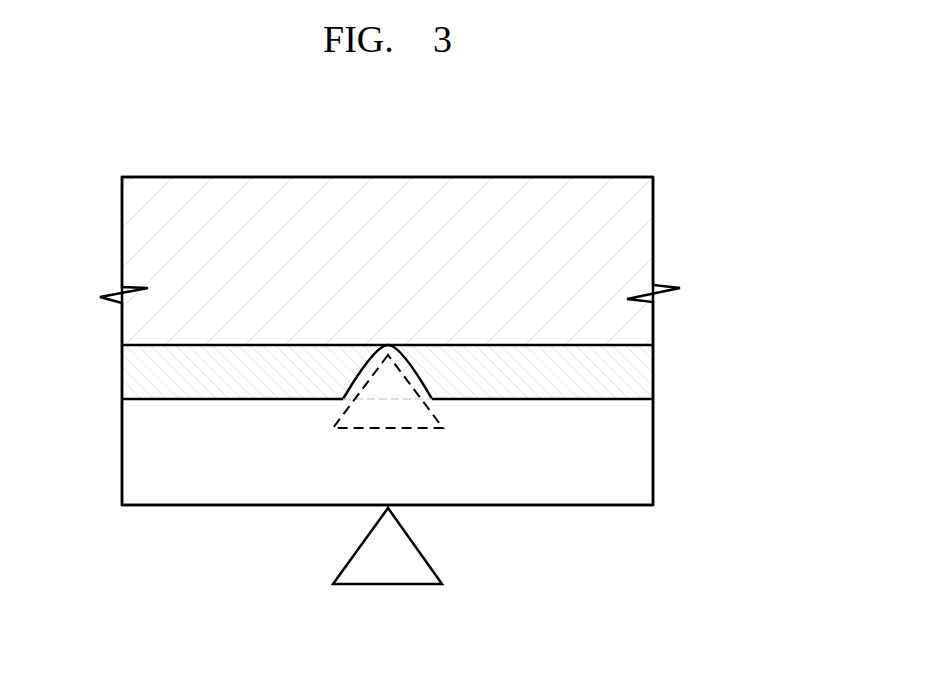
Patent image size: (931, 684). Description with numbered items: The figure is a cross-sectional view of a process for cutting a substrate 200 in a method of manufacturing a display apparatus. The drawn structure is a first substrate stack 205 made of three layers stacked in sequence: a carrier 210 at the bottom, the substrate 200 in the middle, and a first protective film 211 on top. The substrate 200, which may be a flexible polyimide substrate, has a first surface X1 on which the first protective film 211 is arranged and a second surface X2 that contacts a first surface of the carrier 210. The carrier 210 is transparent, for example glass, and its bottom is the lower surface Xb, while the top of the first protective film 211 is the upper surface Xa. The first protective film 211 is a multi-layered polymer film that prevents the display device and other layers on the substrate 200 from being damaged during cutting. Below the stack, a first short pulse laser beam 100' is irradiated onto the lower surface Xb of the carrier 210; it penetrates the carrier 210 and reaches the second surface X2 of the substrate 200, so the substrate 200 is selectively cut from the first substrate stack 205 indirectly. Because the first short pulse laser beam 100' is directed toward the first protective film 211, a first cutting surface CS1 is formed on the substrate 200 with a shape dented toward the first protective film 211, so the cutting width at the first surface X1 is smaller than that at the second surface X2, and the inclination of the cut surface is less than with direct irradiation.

The first protective film 211 is at (647, 251).
The substrate 200 is at (647, 372).
The carrier 210 is at (647, 450).
The first substrate stack 205 is at (765, 245).
The first cutting surface CS1 is at (418, 373).
The first short pulse laser beam 100' is at (388, 505).
The upper surface of the first protective film Xa is at (158, 176).
The lower surface of the carrier Xb is at (160, 506).
The first surface X1 is at (157, 345).
The second surface X2 is at (157, 399).